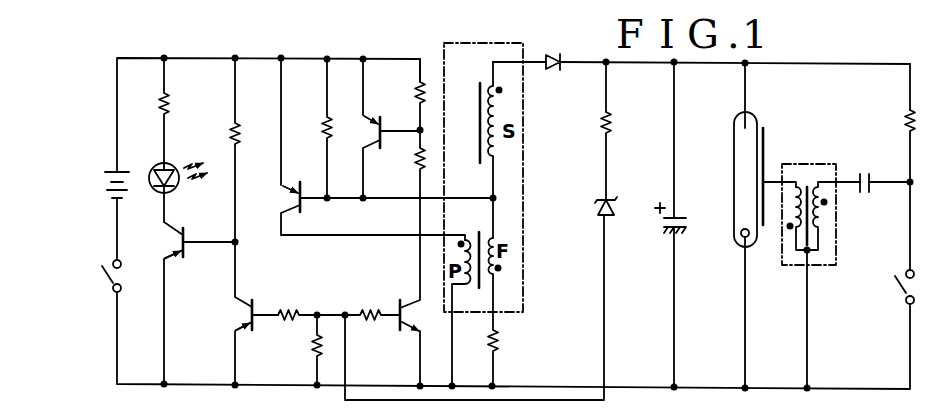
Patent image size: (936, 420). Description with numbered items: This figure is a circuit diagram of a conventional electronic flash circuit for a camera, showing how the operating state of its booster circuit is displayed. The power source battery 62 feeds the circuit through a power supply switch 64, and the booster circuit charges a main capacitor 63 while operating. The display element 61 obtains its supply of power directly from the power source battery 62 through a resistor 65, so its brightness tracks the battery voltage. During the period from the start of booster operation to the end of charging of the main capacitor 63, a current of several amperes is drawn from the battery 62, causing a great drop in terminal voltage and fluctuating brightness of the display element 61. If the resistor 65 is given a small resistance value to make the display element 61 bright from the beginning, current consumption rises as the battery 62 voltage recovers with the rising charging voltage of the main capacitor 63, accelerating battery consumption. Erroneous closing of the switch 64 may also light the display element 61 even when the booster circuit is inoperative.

The display element 61 is at (175, 188).
The power source battery 62 is at (105, 185).
The main capacitor 63 is at (677, 217).
The power supply switch 64 is at (103, 281).
The resistor 65 is at (173, 107).